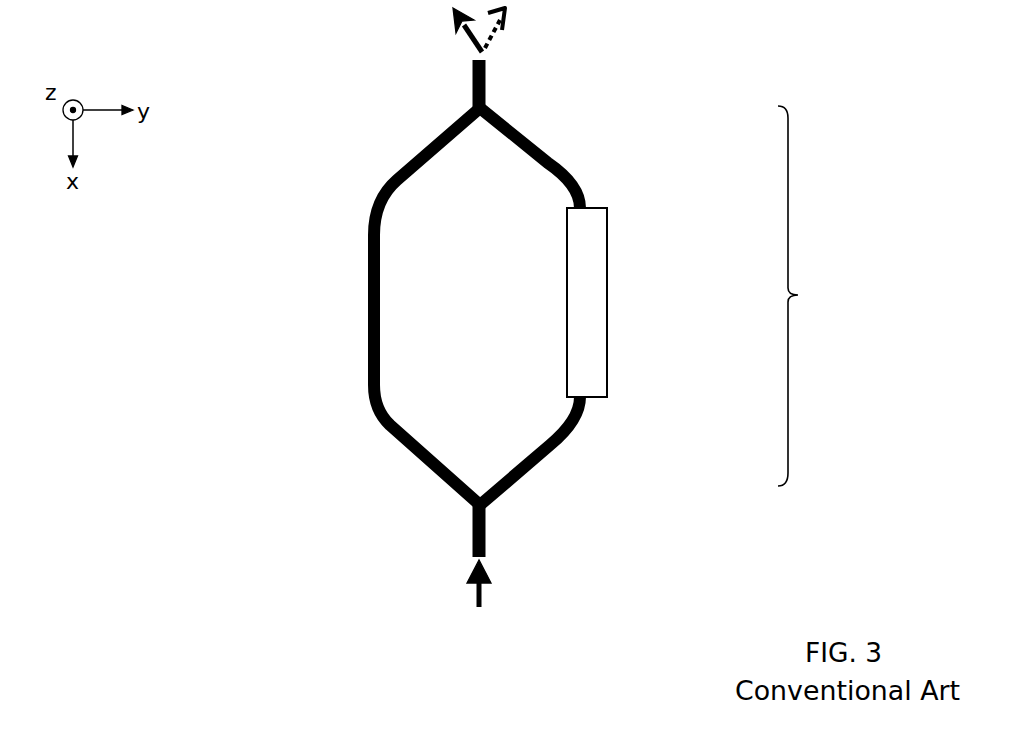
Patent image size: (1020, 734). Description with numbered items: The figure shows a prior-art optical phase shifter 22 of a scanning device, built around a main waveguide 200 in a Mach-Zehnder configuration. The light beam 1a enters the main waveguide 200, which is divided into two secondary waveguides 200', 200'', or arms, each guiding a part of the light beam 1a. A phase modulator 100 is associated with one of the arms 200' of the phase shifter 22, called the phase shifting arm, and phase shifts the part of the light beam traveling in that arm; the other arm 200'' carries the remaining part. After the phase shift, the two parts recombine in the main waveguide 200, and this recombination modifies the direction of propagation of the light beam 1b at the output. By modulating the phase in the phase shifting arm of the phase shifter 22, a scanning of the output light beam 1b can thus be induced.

The optical phase shifter 22 is at (813, 296).
The main waveguide 200 is at (419, 307).
The secondary waveguide 200' is at (574, 297).
The secondary waveguide 200'' is at (367, 306).
The phase modulator 100 is at (593, 230).
The light beam 1a is at (490, 585).
The light beam 1b is at (513, 37).